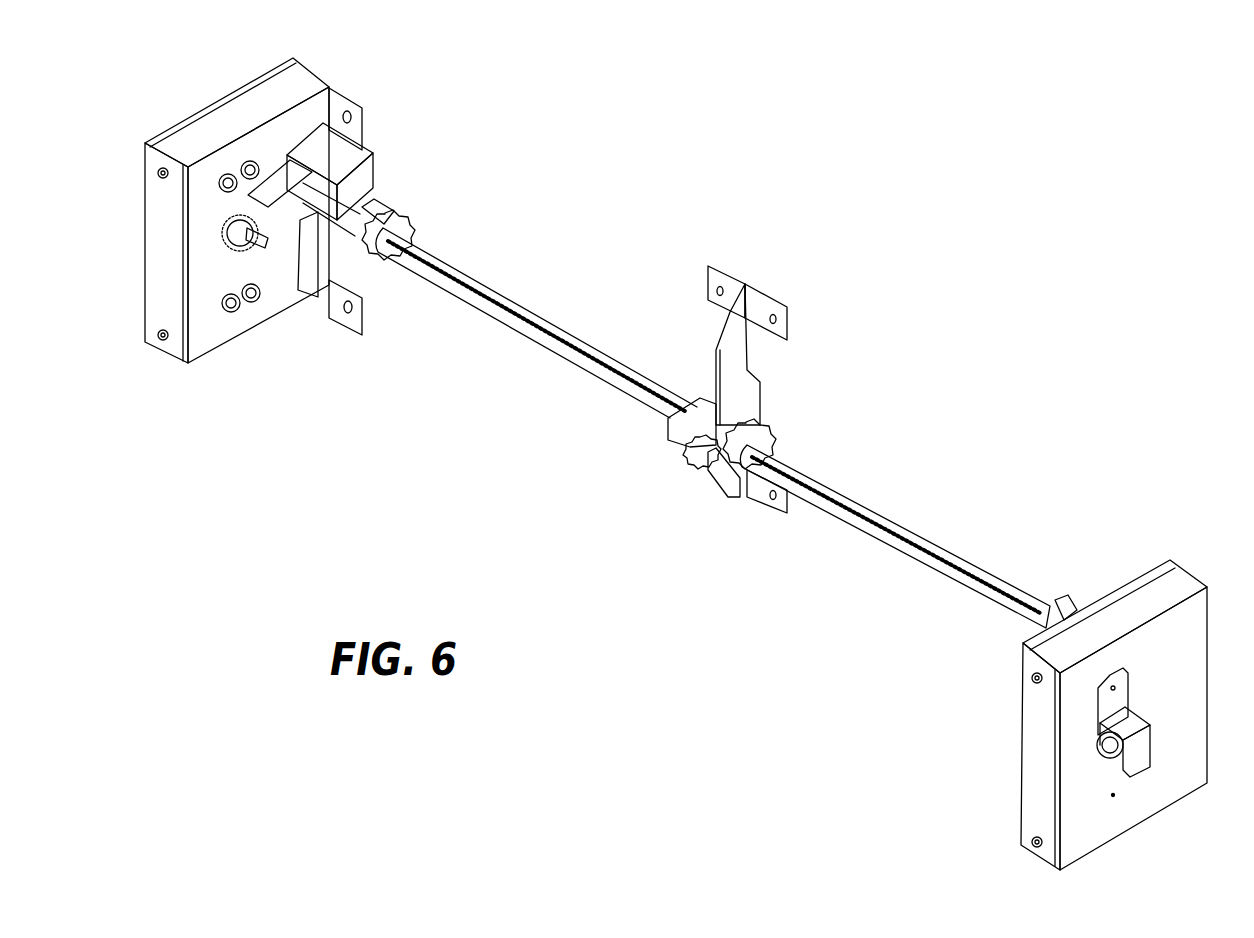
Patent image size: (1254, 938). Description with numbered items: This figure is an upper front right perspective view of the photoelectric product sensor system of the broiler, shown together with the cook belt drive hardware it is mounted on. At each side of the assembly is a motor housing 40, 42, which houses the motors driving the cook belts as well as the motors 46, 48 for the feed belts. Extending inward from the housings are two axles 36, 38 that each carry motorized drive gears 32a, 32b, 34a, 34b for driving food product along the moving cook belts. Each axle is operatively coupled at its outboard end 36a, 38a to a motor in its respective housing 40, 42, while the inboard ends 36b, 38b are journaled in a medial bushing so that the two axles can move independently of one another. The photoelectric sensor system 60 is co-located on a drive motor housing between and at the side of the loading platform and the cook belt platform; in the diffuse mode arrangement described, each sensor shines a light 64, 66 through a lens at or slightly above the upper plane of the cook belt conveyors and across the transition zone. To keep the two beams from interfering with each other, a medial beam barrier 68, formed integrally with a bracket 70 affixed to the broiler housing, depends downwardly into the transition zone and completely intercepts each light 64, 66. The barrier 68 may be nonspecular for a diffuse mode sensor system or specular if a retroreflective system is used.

The housing 40 is at (270, 90).
The housing 42 is at (1170, 580).
The motor 46 is at (223, 236).
The motor 48 is at (1107, 753).
The photoelectric sensor system 60 is at (277, 177).
The light 64 is at (442, 262).
The light 66 is at (920, 540).
The axle 36 is at (500, 300).
The axle 38 is at (895, 536).
The outboard end 36a is at (367, 207).
The inboard end 36b is at (690, 392).
The outboard end 38a is at (1024, 636).
The inboard end 38b is at (705, 452).
The motorized drive gear 34a is at (392, 216).
The motorized drive gear 34b is at (690, 443).
The motorized drive gear 32a is at (1073, 610).
The motorized drive gear 32b is at (762, 423).
The medial beam barrier 68 is at (682, 422).
The bracket 70 is at (760, 307).